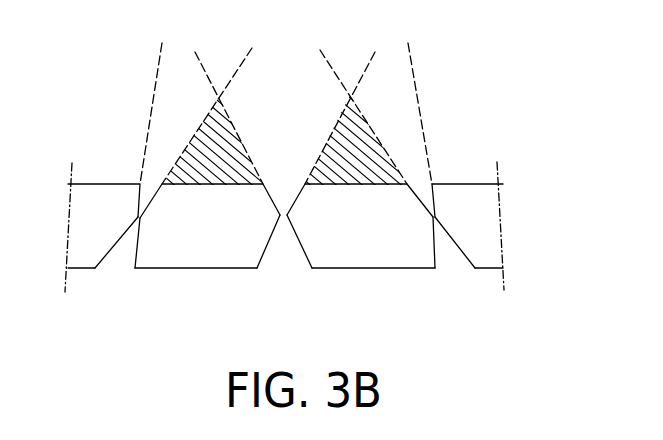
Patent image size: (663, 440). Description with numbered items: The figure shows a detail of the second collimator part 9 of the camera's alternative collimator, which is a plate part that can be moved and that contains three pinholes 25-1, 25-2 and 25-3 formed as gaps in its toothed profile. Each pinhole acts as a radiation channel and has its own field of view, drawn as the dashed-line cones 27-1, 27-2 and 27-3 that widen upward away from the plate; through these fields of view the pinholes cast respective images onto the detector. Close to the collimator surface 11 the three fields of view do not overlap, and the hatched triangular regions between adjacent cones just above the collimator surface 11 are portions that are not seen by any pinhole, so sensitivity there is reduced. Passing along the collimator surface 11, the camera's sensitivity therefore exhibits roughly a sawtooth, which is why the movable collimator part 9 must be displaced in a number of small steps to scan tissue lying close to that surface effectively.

The second collimator part 9 is at (487, 199).
The collimator surface 11 is at (393, 183).
The pinhole 25-1 is at (134, 219).
The pinhole 25-2 is at (282, 217).
The pinhole 25-3 is at (435, 218).
The field of view 27-1 is at (207, 107).
The field of view 27-2 is at (313, 107).
The field of view 27-3 is at (413, 105).